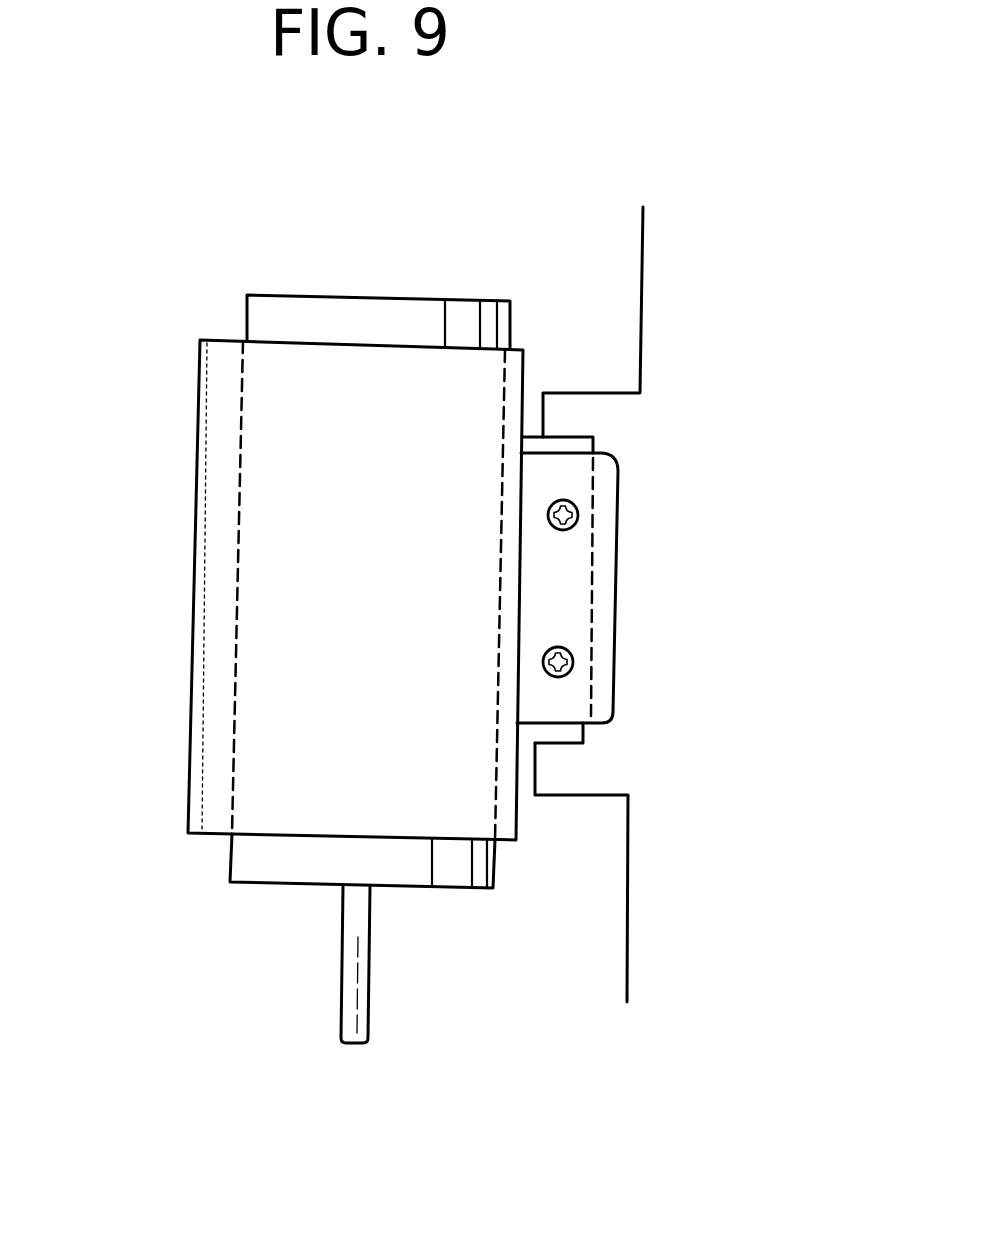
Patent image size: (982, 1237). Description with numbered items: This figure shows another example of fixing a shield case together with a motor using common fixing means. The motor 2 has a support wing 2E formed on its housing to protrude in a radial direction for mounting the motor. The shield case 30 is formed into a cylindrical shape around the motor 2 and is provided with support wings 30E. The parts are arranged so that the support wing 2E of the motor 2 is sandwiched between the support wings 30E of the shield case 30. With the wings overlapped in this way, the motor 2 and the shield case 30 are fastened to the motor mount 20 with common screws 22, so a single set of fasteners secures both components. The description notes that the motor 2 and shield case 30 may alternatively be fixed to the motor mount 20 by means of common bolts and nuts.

The motor 2 is at (385, 316).
The support wing 2E is at (558, 735).
The motor mount 20 is at (652, 820).
The screws 22 is at (572, 500).
The shield case 30 is at (210, 513).
The support wings 30E is at (603, 617).